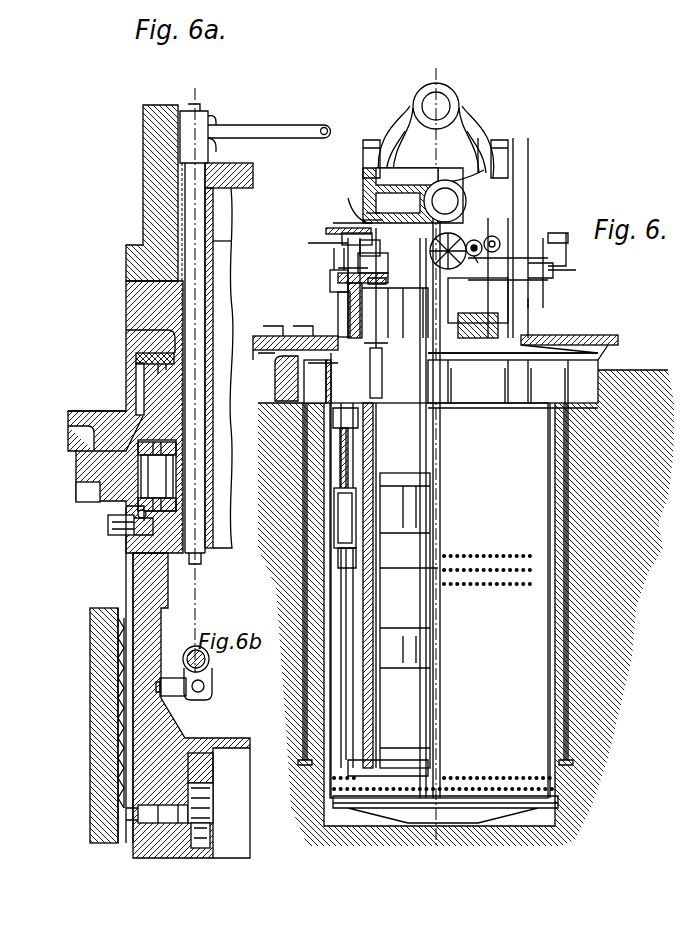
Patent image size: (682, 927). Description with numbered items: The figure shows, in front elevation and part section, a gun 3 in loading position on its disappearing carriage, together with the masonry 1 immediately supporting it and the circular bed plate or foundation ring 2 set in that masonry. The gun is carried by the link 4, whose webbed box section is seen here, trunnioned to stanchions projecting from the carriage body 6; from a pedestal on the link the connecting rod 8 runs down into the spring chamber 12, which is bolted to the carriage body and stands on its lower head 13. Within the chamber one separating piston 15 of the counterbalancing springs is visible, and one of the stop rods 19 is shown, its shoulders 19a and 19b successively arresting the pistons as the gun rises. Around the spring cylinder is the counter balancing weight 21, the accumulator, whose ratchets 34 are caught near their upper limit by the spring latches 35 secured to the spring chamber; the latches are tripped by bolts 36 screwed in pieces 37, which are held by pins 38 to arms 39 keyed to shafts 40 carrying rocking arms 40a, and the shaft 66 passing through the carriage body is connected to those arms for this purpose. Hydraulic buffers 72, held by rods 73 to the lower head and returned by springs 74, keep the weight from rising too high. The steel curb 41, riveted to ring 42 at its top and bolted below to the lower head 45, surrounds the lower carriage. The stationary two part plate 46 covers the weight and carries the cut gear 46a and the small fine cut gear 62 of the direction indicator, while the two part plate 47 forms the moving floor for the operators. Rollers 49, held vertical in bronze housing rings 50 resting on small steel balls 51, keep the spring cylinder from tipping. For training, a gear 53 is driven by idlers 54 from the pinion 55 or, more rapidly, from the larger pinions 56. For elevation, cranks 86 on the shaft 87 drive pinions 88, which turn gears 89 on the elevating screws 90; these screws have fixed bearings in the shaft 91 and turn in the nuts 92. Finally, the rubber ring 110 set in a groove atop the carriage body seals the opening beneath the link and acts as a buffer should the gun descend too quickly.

In FIG. 6, the masonry 1 is at (620, 364).
In FIG. 6, the bed plate or foundation ring 2 is at (513, 380).
In FIG. 6, the gun 3 is at (436, 133).
In FIG. 6, the link system 4 is at (435, 181).
In FIG. 6A, the carriage body 6 is at (135, 182).
In FIG. 6, the connecting rod 8 is at (422, 387).
In FIG. 6A, the spring chamber 12 is at (118, 296).
In FIG. 6, the spring chamber 12 is at (365, 608).
In FIG. 6, the lower head 13 is at (378, 752).
In FIG. 6, the piston 15 is at (399, 565).
In FIG. 6, the stop rods 19 is at (405, 699).
In FIG. 6, the shoulder 19a is at (402, 628).
In FIG. 6, the shoulder 19b is at (405, 478).
In FIG. 6A, the counter balancing weight 21 is at (82, 699).
In FIG. 6A, the ratchets 34 is at (112, 822).
In FIG. 6A, the spring latches 35 is at (118, 565).
In FIG. 6A, the bolts 36 is at (165, 812).
In FIG. 6A, the pieces 37 is at (188, 815).
In FIG. 6B, the pieces 37 is at (172, 688).
In FIG. 6A, the pins 38 is at (196, 820).
In FIG. 6B, the pins 38 is at (196, 682).
In FIG. 6B, the arms 39 is at (204, 671).
In FIG. 6A, the shafts 40 is at (186, 558).
In FIG. 6B, the shafts 40 is at (201, 651).
In FIG. 6, the shafts 40 is at (374, 352).
In FIG. 6A, the rocking arms 40a is at (238, 118).
In FIG. 6, the rocking arms 40a is at (381, 271).
In FIG. 6, the steel curb 41 is at (360, 451).
In FIG. 6, the ring 42 is at (318, 365).
In FIG. 6, the lower head 45 is at (480, 815).
In FIG. 6A, the two part plate 46 is at (88, 492).
In FIG. 6A, the gear 46a is at (128, 370).
In FIG. 6A, the two part plate (moving floor) 47 is at (75, 403).
In FIG. 6, the two part plate (moving floor) 47 is at (570, 334).
In FIG. 6A, the rollers 49 is at (157, 475).
In FIG. 6A, the bronze housing rings 50 is at (128, 500).
In FIG. 6A, the steel balls 51 is at (120, 512).
In FIG. 6, the gear 53 is at (444, 262).
In FIG. 6, the idlers 54 is at (466, 250).
In FIG. 6, the pinion 55 is at (488, 218).
In FIG. 6, the larger pinions 56 is at (492, 238).
In FIG. 6A, the fine cut gear 62 is at (128, 346).
In FIG. 6, the shaft 66 is at (520, 294).
In FIG. 6, the hydraulic buffers 72 is at (342, 518).
In FIG. 6, the rods 73 is at (342, 677).
In FIG. 6, the springs 74 is at (340, 437).
In FIG. 6, the cranks 86 is at (552, 258).
In FIG. 6, the shaft 87 is at (333, 216).
In FIG. 6, the pinions 88 is at (318, 225).
In FIG. 6, the gears 89 is at (366, 213).
In FIG. 6, the elevating screws 90 is at (330, 314).
In FIG. 6, the shaft 91 is at (372, 240).
In FIG. 6, the nuts 92 is at (322, 275).
In FIG. 6, the rubber ring 110 is at (365, 208).